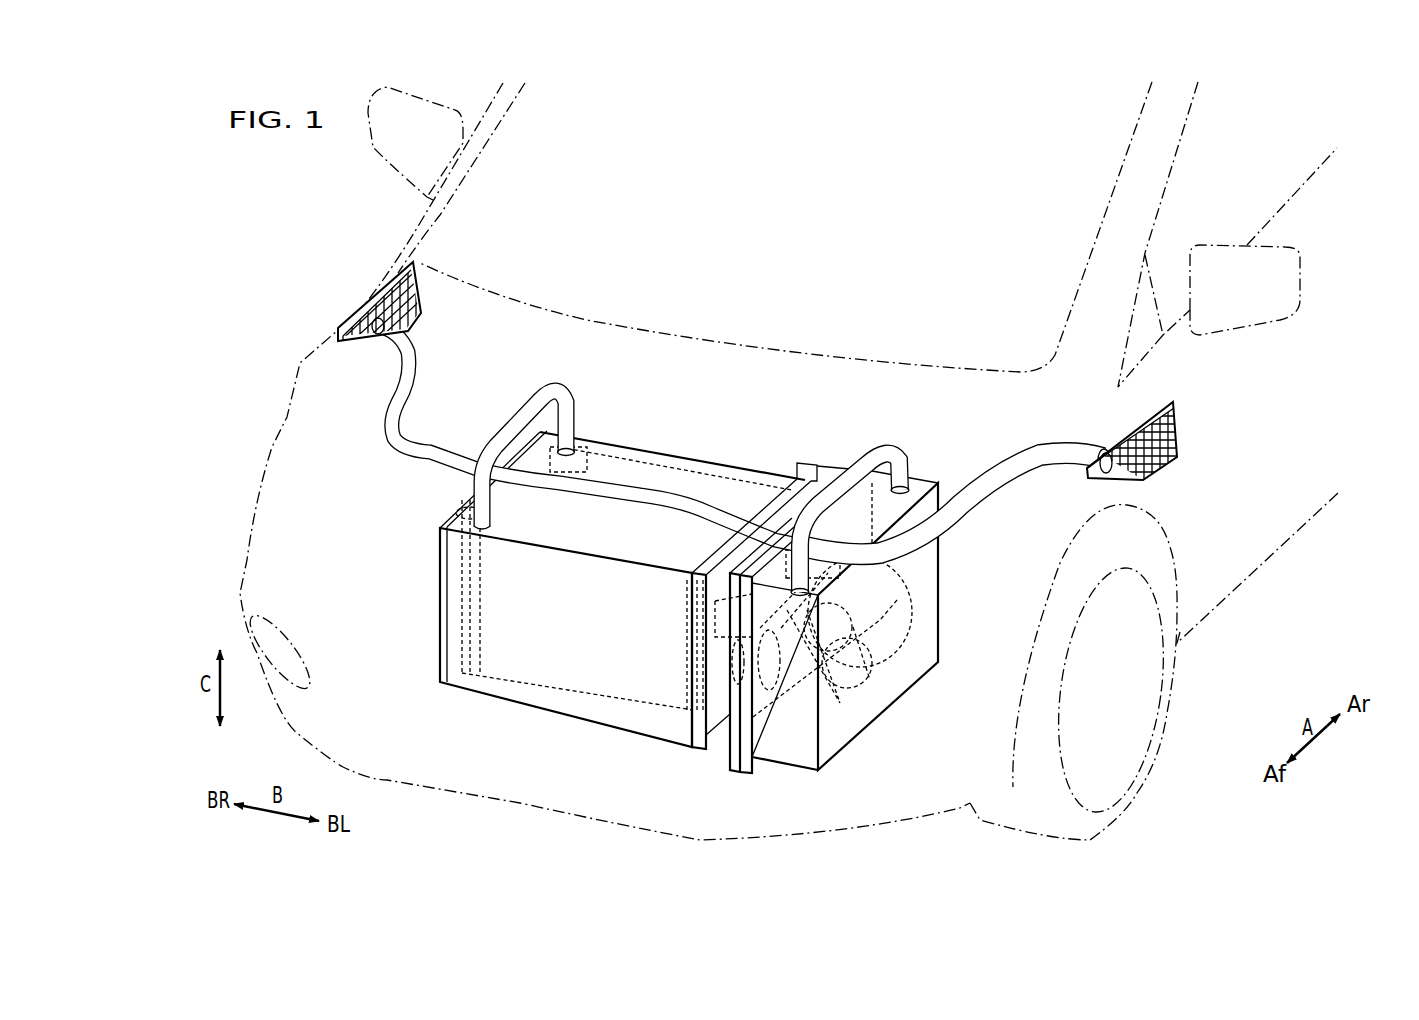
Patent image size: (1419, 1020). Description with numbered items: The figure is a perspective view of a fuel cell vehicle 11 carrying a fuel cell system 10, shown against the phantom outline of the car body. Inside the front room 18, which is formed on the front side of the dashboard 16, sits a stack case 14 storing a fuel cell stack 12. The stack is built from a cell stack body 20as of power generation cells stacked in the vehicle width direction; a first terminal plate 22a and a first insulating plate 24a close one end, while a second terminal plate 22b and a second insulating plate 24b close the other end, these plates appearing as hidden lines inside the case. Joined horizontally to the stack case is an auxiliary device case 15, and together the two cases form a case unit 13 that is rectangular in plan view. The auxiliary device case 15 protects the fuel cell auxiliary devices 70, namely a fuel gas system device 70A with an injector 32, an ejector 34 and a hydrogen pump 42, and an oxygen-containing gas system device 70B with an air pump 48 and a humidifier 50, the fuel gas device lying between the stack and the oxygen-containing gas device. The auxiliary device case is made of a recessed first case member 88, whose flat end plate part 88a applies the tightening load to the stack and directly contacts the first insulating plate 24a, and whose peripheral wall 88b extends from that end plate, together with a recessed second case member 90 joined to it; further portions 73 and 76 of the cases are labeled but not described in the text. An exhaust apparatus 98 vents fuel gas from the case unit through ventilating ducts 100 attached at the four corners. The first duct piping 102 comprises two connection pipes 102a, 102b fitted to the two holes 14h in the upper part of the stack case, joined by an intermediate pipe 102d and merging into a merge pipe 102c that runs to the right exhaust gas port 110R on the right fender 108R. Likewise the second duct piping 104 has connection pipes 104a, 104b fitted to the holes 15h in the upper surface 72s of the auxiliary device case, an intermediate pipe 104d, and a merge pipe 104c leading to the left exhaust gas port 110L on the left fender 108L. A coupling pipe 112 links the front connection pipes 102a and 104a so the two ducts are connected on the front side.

The fuel cell system 10 is at (594, 365).
The fuel cell vehicle 11 is at (260, 199).
The fuel cell stack 12 is at (687, 461).
The case unit 13 is at (656, 779).
The stack case 14 is at (614, 715).
The auxiliary device case 15 is at (687, 751).
The hole 14h is at (457, 517).
The holes 15h is at (899, 490).
The dashboard 16 is at (692, 358).
The front room 18 is at (837, 405).
The cell stack body 20as is at (658, 470).
The first terminal plate 22a is at (688, 657).
The second terminal plate 22b is at (477, 640).
The first insulating plate 24a is at (693, 688).
The second insulating plate 24b is at (465, 658).
The injector 32 is at (847, 657).
The ejector 34 is at (822, 693).
The hydrogen pump 42 is at (781, 692).
The air pump 48 is at (890, 663).
The humidifier 50 is at (887, 643).
The fuel cell auxiliary devices 70 is at (928, 568).
The fuel gas system device 70A is at (712, 618).
The oxygen-containing gas system device 70B is at (913, 638).
The upper surface 72s is at (862, 507).
The housing wall 73 is at (917, 667).
The bottom plate 76 is at (543, 694).
The first case member 88 is at (712, 748).
The end plate part 88a is at (767, 507).
The peripheral wall 88b is at (806, 478).
The second case member 90 is at (772, 754).
The exhaust apparatus 98 is at (503, 402).
The ventilating ducts 100 is at (387, 458).
The U-shaped pipe 102 is at (524, 460).
The connection pipe 102a is at (471, 491).
The connection pipe 102b is at (573, 415).
The merge pipe 102c is at (393, 399).
The intermediate pipe 102d is at (506, 437).
The U-shaped pipe 104 is at (850, 525).
The connection pipe 104a is at (790, 572).
The connection pipe 104b is at (913, 468).
The merge pipe 104c is at (985, 494).
The intermediate pipe 104d is at (837, 495).
The right fender 108R is at (305, 372).
The left fender 108L is at (1150, 480).
The right exhaust gas port 110R is at (393, 281).
The left exhaust gas port 110L is at (1174, 428).
The coupling pipe 112 is at (597, 491).